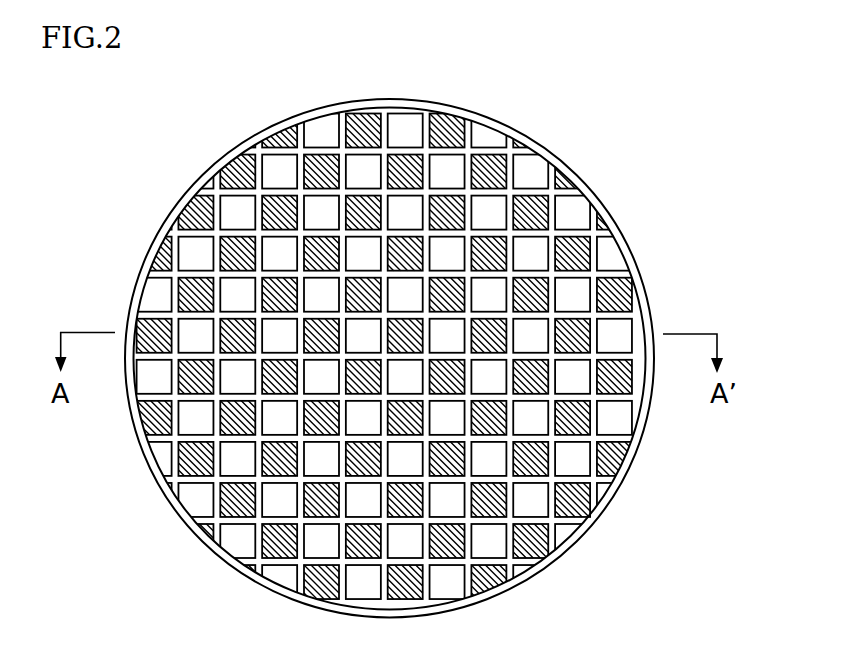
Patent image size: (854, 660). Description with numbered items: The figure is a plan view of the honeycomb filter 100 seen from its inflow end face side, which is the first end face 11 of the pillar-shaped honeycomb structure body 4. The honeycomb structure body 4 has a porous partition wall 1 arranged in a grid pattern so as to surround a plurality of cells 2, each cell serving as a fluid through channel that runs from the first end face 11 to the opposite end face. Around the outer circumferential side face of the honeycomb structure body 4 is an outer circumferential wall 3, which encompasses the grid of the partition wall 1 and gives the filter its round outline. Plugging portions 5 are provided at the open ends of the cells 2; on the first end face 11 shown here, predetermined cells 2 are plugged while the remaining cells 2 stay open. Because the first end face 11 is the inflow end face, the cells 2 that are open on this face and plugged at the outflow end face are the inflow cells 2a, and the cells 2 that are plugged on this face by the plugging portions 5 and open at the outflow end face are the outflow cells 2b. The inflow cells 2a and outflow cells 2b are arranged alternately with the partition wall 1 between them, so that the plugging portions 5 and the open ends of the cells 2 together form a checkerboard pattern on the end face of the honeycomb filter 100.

The honeycomb filter 100 is at (710, 68).
The first end face 11 is at (202, 152).
The honeycomb structure body 4 is at (651, 298).
The partition wall 1 is at (493, 192).
The plugging portions 5 is at (403, 173).
The cells 2 is at (619, 232).
The inflow cells 2a is at (532, 252).
The outflow cells 2b is at (532, 295).
The outer circumferential wall 3 is at (593, 510).